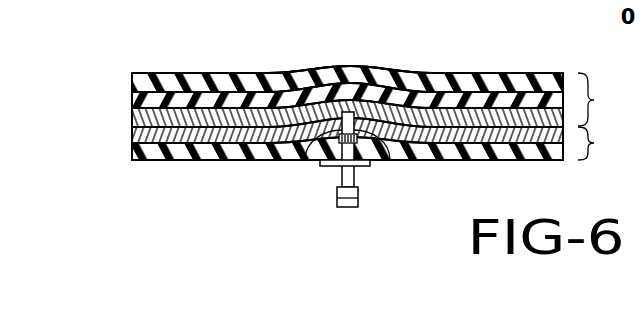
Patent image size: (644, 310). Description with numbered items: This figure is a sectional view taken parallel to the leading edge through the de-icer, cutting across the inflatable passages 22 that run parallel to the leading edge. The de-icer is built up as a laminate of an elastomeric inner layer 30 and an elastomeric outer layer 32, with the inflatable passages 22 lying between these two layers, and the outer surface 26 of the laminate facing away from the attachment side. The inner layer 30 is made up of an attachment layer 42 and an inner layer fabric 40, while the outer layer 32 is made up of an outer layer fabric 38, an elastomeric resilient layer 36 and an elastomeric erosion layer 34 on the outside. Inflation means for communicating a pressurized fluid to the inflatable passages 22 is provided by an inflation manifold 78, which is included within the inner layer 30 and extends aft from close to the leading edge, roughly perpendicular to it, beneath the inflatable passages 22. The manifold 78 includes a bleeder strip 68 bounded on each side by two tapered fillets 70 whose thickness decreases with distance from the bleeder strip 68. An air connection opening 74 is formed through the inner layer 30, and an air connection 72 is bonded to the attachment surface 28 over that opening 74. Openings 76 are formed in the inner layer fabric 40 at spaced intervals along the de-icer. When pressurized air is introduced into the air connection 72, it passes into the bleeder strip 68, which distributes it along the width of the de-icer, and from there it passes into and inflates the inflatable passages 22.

The inflatable passages 22 is at (238, 126).
The outer surface 26 is at (498, 73).
The attachment surface 28 is at (518, 162).
The elastomeric inner layer 30 is at (602, 143).
The elastomeric outer layer 32 is at (602, 99).
The elastomeric erosion layer 34 is at (172, 82).
The elastomeric resilient layer 36 is at (250, 98).
The outer layer fabric 38 is at (137, 112).
The inner layer fabric 40 is at (132, 132).
The attachment layer 42 is at (167, 157).
The bleeder strip 68 is at (400, 115).
The tapered fillets 70 is at (320, 143).
The air connection 72 is at (344, 208).
The air connection opening 74 is at (348, 177).
The openings 76 is at (347, 112).
The inflation manifold 78 is at (330, 150).